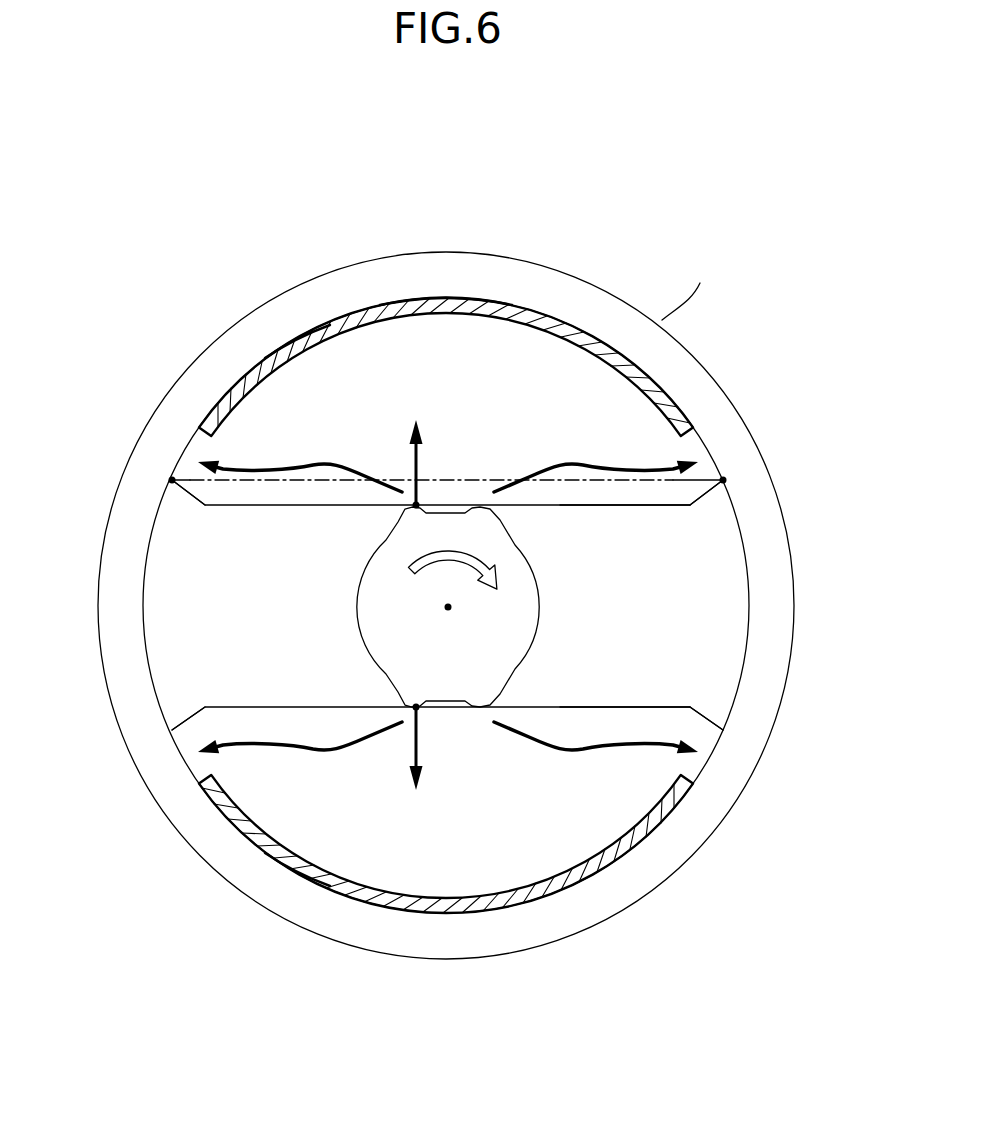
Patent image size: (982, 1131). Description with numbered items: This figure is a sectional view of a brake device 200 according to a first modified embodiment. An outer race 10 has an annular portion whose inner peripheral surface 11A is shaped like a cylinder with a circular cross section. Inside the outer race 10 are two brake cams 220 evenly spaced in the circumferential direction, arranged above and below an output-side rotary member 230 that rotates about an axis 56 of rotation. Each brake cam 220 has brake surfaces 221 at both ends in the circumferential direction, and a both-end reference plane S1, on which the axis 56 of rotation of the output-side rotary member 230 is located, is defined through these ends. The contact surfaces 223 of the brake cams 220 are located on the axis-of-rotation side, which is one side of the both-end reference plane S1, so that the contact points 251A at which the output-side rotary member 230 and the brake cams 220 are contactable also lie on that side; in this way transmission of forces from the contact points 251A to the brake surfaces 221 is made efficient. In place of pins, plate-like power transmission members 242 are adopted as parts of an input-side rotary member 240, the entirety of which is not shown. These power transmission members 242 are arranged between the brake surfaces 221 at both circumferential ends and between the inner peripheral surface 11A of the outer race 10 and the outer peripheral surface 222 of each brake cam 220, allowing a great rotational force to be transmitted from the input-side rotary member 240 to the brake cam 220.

The brake device 200 is at (715, 216).
The outer race 10 is at (662, 320).
The inner peripheral surface 11A is at (410, 300).
The power transmission member 242 is at (510, 305).
The input-side rotary member 240 is at (446, 608).
The outer peripheral surface 222 is at (312, 337).
The brake cam 220 is at (716, 499).
The brake surface 221 is at (172, 479).
The contact surface 223 is at (650, 506).
The both-end reference plane S1 is at (314, 482).
The output-side rotary member 230 is at (545, 572).
The axis of rotation 56 is at (448, 607).
The contact point 251A is at (412, 503).